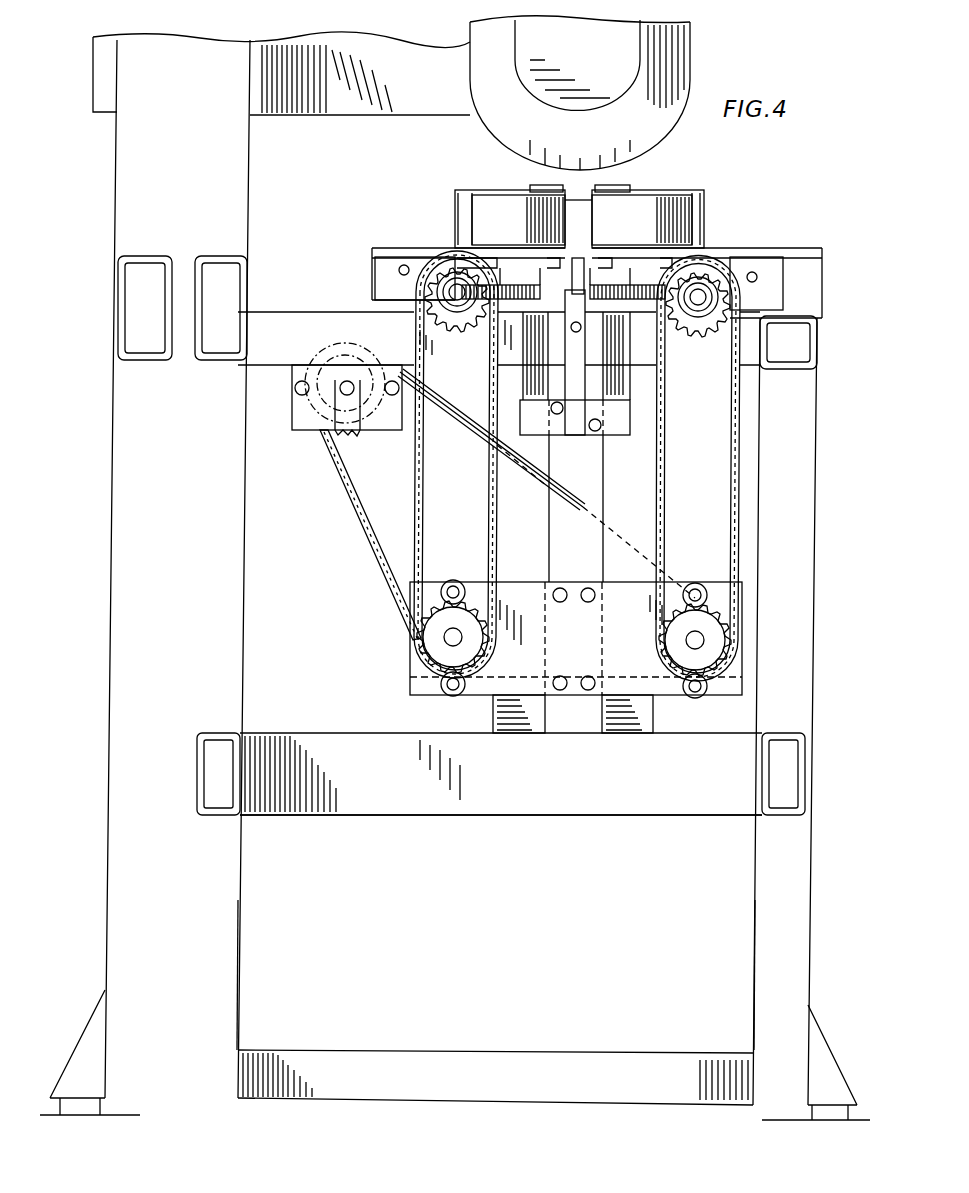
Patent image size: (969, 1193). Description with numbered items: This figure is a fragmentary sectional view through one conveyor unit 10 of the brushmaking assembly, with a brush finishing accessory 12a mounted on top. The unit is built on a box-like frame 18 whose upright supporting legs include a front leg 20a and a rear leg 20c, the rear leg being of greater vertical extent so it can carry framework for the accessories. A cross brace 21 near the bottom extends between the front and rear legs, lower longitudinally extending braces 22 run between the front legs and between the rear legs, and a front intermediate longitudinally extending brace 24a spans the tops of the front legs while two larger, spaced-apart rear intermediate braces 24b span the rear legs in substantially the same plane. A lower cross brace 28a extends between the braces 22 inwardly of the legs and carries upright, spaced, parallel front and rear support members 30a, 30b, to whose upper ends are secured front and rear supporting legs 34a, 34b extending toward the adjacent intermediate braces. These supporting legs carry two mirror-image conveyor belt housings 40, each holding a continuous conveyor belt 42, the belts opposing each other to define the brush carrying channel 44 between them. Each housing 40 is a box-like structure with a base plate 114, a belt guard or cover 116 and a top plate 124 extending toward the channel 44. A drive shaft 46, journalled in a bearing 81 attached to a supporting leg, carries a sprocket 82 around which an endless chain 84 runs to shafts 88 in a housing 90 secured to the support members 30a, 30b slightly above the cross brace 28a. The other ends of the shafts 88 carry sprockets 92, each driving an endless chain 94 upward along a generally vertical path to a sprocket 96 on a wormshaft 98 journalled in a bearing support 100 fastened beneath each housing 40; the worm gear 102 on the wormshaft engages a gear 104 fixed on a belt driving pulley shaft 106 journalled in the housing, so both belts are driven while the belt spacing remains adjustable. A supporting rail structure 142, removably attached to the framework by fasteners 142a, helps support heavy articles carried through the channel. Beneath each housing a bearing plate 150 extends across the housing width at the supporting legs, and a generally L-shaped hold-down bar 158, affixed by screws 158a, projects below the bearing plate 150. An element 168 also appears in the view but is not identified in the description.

The conveyor unit 10 is at (442, 835).
The brush finishing accessory 12a is at (690, 45).
The box-like frame 18 is at (99, 625).
The front leg 20a is at (753, 977).
The rear leg 20c is at (240, 962).
The cross brace 21 is at (485, 1045).
The lower longitudinally extending brace 22 is at (197, 777).
The front intermediate longitudinally extending brace 24a is at (817, 345).
The rear intermediate longitudinally extending brace 24b is at (150, 250).
The lower cross brace 28a is at (548, 788).
The front support member 30a is at (653, 712).
The rear support member 30b is at (493, 712).
The front supporting leg 34a is at (647, 356).
The rear supporting leg 34b is at (302, 338).
The conveyor belt housing 40 is at (484, 177).
The conveyor belt 42 is at (582, 220).
The brush carrying channel 44 is at (580, 205).
The drive shaft 46 is at (330, 380).
The bearing or journalling means 81 is at (292, 408).
The sprocket 82 is at (345, 436).
The endless chain 84 is at (358, 530).
The shaft 88 is at (463, 636).
The housing 90 is at (578, 582).
The sprocket 92 is at (453, 637).
The endless chain 94 is at (498, 522).
The sprocket 96 is at (460, 325).
The wormshaft 98 is at (455, 290).
The bearing support 100 is at (425, 278).
The worm gear 102 is at (440, 280).
The gear 104 is at (568, 310).
The belt driving pulley shaft 106 is at (569, 273).
The base plate 114 is at (430, 258).
The belt guard or cover 116 is at (458, 198).
The top plate 124 is at (540, 186).
The supporting rail structure 142 is at (585, 390).
The fasteners 142a is at (595, 431).
The bearing plate 150 is at (375, 252).
The hold-down bar 158 is at (380, 280).
The screws 158a is at (404, 270).
The bracket 168 is at (372, 296).